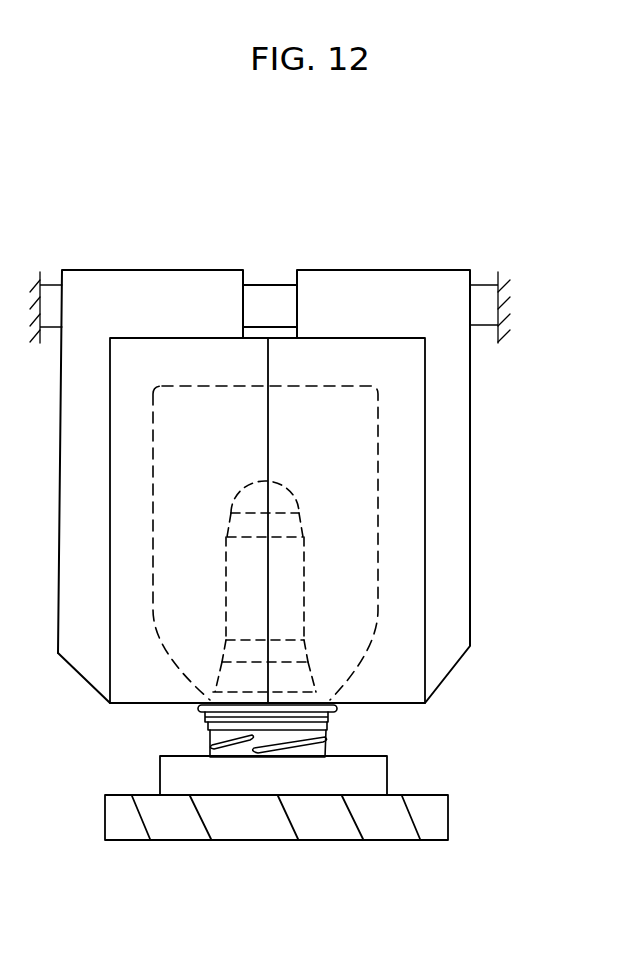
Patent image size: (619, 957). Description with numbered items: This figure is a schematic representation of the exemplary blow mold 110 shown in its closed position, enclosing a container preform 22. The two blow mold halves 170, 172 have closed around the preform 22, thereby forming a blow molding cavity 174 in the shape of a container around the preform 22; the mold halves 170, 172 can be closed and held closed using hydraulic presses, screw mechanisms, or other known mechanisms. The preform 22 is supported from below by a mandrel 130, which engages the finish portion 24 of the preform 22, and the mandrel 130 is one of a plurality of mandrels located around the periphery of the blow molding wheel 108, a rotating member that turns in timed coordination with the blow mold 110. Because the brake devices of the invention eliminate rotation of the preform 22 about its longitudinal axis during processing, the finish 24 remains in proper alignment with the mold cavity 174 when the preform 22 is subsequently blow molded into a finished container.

The blow mold 110 is at (317, 168).
The blow mold half 170 is at (185, 362).
The blow mold half 172 is at (365, 363).
The blow molding cavity 174 is at (328, 457).
The preform 22 is at (285, 577).
The finish portion 24 is at (207, 742).
The mandrel 130 is at (360, 780).
The blow molding wheel 108 is at (233, 823).